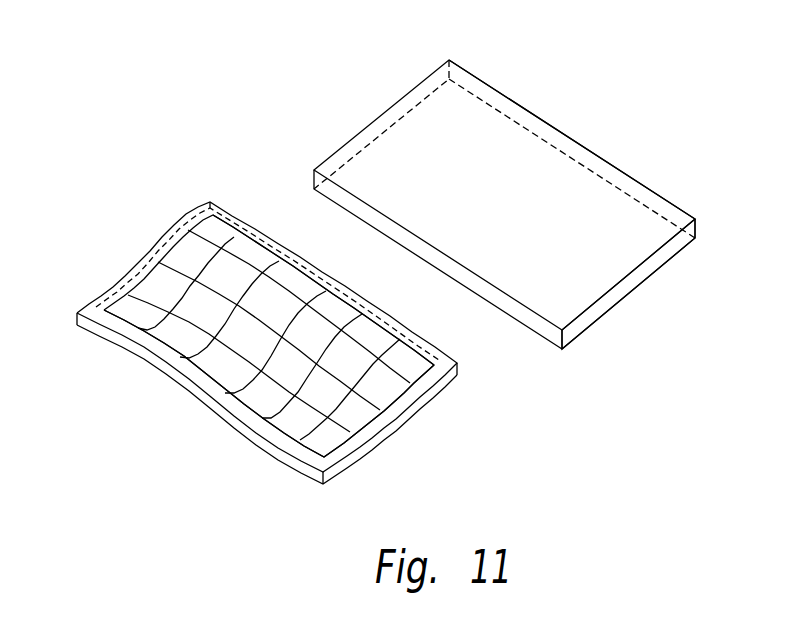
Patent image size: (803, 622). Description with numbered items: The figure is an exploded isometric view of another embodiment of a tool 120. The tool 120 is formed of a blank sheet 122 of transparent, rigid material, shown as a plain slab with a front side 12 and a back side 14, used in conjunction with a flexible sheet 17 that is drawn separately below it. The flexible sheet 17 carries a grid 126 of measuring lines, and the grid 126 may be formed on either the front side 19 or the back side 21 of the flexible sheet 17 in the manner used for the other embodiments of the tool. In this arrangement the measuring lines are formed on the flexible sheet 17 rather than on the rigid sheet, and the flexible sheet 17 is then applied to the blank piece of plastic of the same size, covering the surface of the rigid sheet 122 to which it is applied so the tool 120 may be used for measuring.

The tool 120 is at (207, 130).
The rigid substrate plate 122 is at (429, 74).
The front side 12 is at (612, 220).
The back side 14 is at (608, 263).
The flexible sheet 17 is at (112, 289).
The grid of measuring lines 126 is at (244, 354).
The front side 19 is at (418, 363).
The back side 21 is at (345, 413).